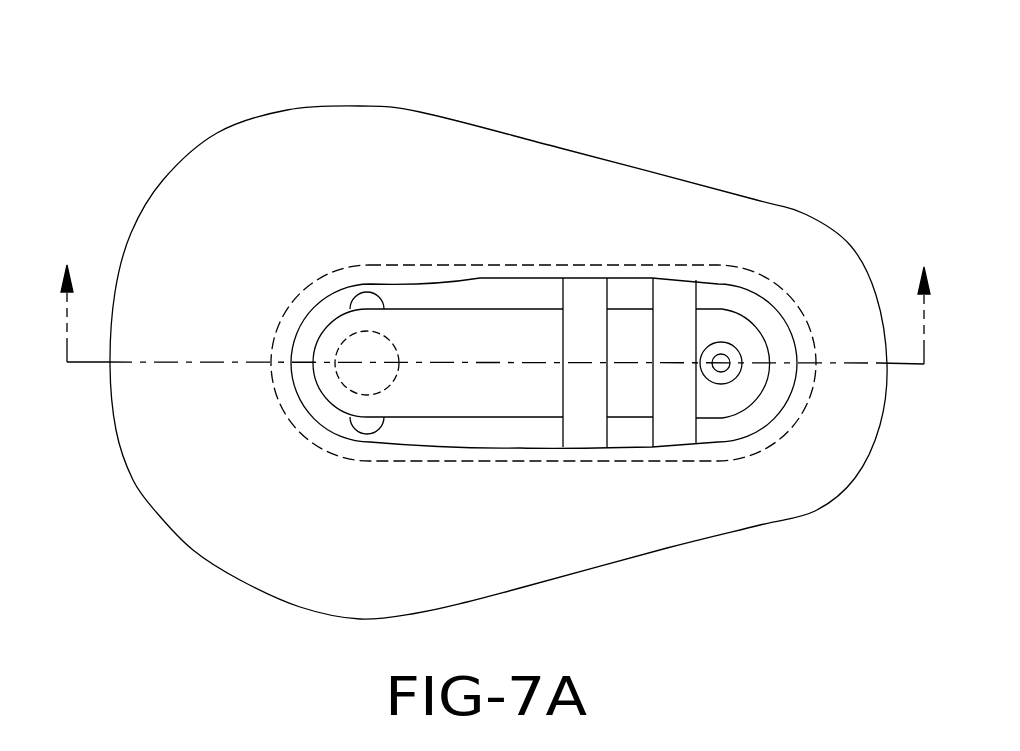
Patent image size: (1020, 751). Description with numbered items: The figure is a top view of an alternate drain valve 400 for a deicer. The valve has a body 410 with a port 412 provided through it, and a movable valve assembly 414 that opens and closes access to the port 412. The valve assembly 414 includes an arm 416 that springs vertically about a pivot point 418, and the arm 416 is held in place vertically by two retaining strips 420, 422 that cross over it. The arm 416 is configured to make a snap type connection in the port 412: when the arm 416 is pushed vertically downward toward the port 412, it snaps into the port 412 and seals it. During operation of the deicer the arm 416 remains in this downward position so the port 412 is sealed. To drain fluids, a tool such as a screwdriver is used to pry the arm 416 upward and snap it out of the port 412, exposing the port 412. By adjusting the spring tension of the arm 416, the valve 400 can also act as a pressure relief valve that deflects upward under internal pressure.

The drain valve 400 is at (806, 115).
The body 410 is at (621, 190).
The port 412 is at (362, 350).
The valve assembly 414 is at (505, 306).
The arm 416 is at (496, 403).
The pivot point 418 is at (721, 363).
The retaining strip 420 is at (663, 425).
The retaining strip 422 is at (582, 432).